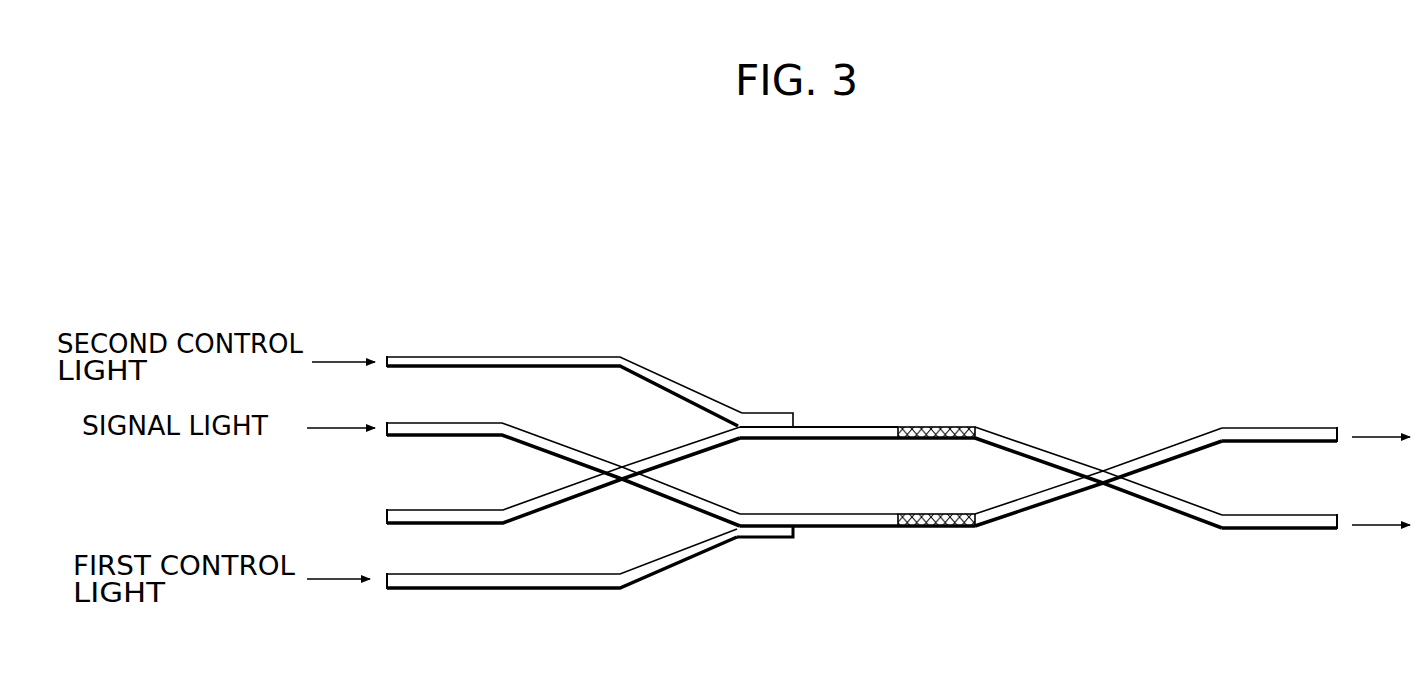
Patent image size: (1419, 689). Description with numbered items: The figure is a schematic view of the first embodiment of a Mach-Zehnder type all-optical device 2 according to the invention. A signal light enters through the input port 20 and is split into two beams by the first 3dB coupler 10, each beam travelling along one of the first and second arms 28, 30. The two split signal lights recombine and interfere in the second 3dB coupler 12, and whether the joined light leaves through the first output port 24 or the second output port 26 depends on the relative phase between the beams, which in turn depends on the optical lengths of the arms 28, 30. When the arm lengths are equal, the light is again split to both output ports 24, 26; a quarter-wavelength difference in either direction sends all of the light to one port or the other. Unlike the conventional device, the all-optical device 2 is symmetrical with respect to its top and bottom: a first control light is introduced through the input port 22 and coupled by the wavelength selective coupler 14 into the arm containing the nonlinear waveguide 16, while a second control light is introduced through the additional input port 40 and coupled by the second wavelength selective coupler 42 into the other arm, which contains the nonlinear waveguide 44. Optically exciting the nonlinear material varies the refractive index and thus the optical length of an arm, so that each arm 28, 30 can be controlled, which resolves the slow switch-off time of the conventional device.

The all-optical device 2 is at (768, 224).
The first 3dB coupler 10 is at (620, 465).
The second 3dB coupler 12 is at (1102, 462).
The wavelength selective coupler 14 is at (766, 540).
The nonlinear waveguide 16 is at (942, 528).
The input port 20 is at (386, 434).
The input port 22 is at (386, 578).
The first output port 24 is at (1340, 443).
The second output port 26 is at (1342, 530).
The first arm 28 is at (843, 426).
The second arm 30 is at (845, 528).
The additional input port 40 is at (386, 356).
The second wavelength selective coupler 42 is at (783, 412).
The nonlinear waveguide 44 is at (964, 426).